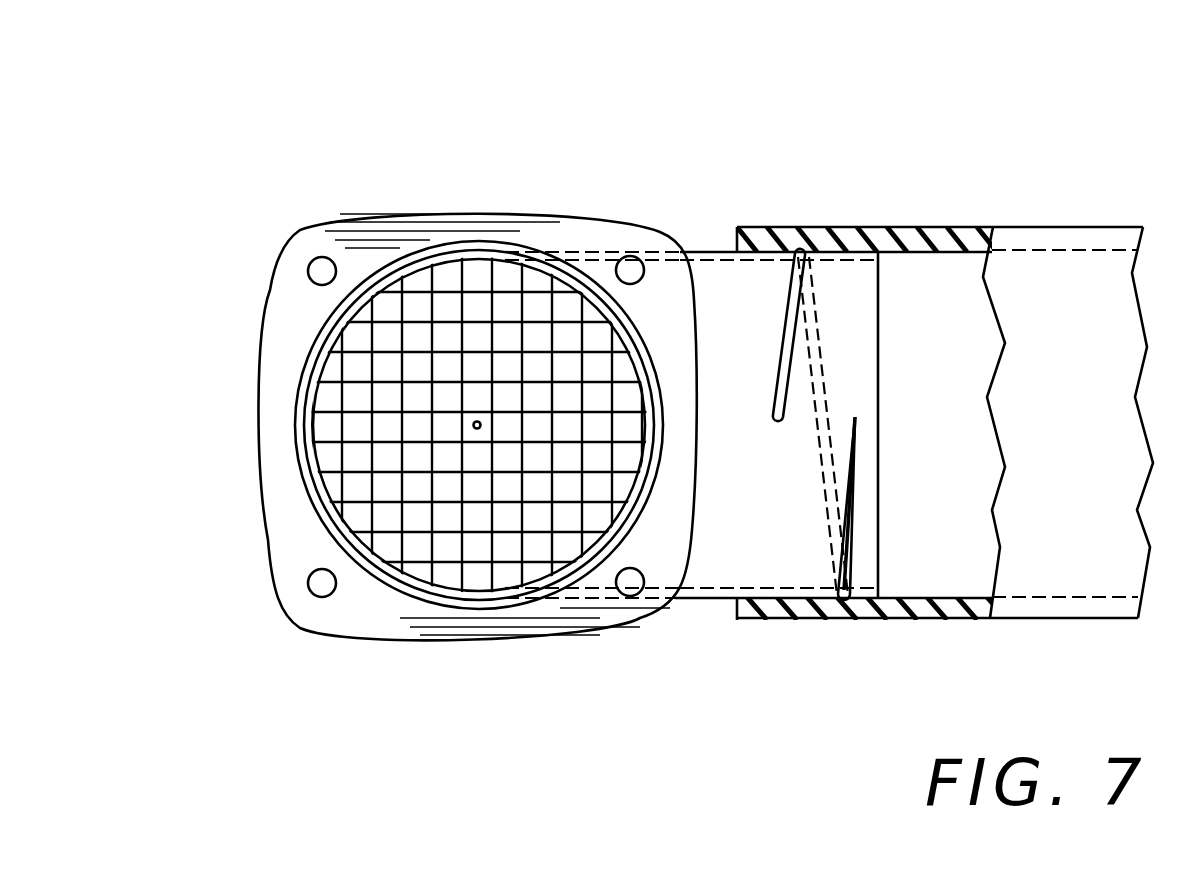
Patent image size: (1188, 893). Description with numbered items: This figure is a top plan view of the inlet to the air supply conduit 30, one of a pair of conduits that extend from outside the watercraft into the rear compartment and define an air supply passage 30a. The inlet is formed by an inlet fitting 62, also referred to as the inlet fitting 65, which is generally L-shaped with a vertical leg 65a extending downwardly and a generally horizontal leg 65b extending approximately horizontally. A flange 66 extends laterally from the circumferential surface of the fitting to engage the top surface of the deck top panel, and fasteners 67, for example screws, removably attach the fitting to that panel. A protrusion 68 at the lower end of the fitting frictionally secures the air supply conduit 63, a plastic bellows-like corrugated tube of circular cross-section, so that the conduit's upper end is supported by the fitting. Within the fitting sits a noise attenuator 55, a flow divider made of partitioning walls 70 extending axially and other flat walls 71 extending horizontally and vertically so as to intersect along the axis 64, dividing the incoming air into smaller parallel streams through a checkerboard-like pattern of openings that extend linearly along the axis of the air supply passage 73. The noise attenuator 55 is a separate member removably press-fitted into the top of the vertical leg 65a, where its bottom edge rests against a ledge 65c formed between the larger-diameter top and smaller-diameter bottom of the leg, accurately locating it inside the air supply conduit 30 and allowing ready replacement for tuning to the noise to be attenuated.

The air supply conduit 30 is at (327, 160).
The air supply passage 30a is at (966, 397).
The noise attenuator 55 is at (367, 337).
The inlet fitting 62 is at (483, 198).
The air supply conduit 63 is at (1071, 226).
The axis 64 is at (477, 420).
The inlet fitting 65 is at (515, 248).
The vertical leg 65a is at (632, 432).
The horizontal leg 65b is at (843, 280).
The ledge 65c is at (606, 512).
The flange 66 is at (576, 224).
The fastener 67 is at (311, 258).
The protrusion 68 is at (780, 362).
The partitioning walls 70 is at (368, 367).
The walls 71 is at (400, 480).
The air supply passage 73 is at (477, 507).